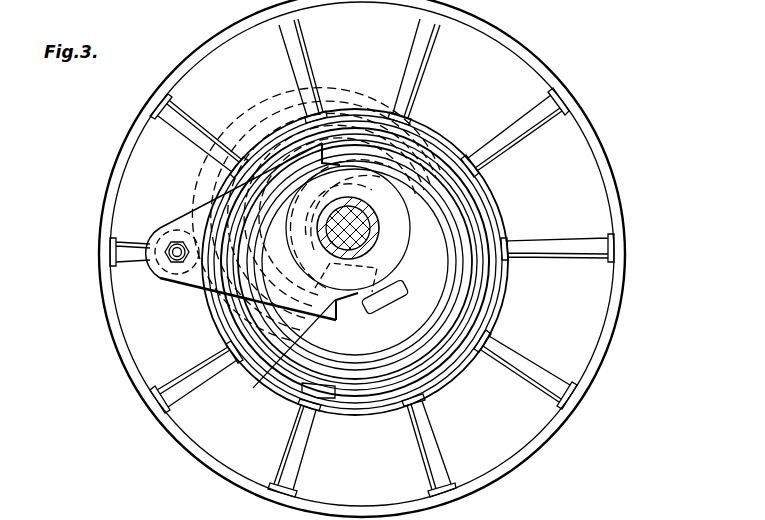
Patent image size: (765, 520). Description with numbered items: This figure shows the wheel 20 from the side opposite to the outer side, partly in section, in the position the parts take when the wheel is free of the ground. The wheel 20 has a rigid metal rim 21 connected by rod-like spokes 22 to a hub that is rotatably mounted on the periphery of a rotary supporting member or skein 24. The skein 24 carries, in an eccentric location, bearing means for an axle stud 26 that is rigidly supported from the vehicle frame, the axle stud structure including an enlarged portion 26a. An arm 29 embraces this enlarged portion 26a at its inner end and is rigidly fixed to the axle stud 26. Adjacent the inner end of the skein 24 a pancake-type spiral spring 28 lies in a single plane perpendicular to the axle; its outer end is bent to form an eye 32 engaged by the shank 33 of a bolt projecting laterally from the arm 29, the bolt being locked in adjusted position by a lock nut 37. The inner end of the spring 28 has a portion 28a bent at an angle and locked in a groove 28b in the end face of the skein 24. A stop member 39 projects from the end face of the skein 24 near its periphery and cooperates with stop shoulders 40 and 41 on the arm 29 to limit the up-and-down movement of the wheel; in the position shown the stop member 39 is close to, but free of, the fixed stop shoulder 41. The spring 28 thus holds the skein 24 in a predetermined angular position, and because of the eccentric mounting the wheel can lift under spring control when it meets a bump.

The wheel 20 is at (379, 258).
The rigid metal rim 21 is at (610, 183).
The rod-like spokes 22 is at (569, 246).
The skein 24 is at (413, 237).
The axle stud 26 is at (368, 212).
The enlarged portion 26a is at (380, 218).
The spiral spring 28 is at (502, 300).
The bent portion 28a is at (336, 278).
The groove 28b is at (358, 312).
The arm 29 is at (196, 210).
The eye 32 is at (163, 256).
The shank 33 is at (168, 260).
The lock nut 37 is at (177, 262).
The stop member 39 is at (392, 297).
The stop shoulder 40 is at (332, 140).
The stop shoulder 41 is at (253, 388).